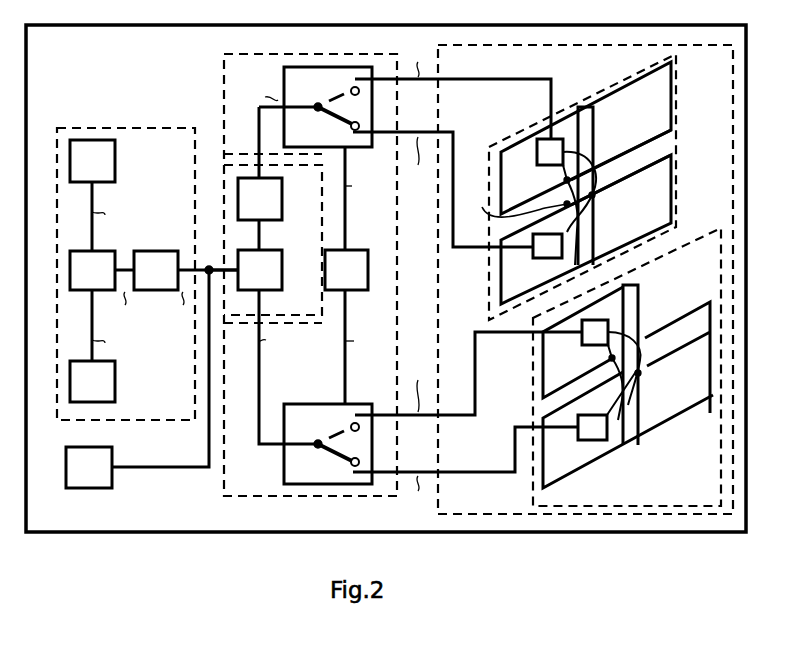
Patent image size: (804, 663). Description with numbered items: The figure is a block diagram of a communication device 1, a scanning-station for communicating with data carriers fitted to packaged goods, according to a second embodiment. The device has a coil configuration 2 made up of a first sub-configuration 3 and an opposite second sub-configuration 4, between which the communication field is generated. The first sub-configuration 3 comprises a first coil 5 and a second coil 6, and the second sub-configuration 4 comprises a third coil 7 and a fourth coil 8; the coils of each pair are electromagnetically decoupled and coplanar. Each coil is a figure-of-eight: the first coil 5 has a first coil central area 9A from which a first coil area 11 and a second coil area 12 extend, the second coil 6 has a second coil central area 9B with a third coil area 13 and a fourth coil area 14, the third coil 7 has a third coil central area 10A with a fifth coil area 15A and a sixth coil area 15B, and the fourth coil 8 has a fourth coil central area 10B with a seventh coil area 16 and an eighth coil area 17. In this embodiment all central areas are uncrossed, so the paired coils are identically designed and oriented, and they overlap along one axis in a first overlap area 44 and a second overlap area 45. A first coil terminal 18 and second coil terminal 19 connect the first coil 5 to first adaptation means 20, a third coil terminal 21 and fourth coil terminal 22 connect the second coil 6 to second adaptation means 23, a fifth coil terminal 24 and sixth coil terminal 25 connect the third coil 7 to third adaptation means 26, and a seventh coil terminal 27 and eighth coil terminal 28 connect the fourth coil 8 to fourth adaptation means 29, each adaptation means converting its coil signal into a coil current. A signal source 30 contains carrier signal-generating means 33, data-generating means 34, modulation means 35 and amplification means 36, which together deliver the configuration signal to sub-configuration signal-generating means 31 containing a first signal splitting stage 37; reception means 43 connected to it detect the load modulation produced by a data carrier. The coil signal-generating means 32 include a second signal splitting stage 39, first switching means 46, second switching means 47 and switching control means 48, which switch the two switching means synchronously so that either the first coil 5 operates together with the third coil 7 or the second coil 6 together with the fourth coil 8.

The communication device 1 is at (268, 537).
The coil configuration 2 is at (436, 312).
The first sub-configuration 3 is at (680, 67).
The second sub-configuration 4 is at (712, 426).
The first coil 5 is at (674, 97).
The second coil 6 is at (676, 213).
The third coil 7 is at (541, 490).
The fourth coil 8 is at (543, 386).
The first coil central area 9A is at (610, 172).
The second coil central area 9B is at (613, 193).
The third coil central area 10A is at (683, 400).
The fourth coil central area 10B is at (653, 445).
The first coil area 11 is at (651, 91).
The second coil area 12 is at (508, 260).
The third coil area 13 is at (512, 164).
The fourth coil area 14 is at (655, 208).
The fifth coil area 15A is at (707, 299).
The sixth coil area 15B is at (559, 460).
The seventh coil area 16 is at (548, 358).
The eighth coil area 17 is at (653, 379).
The first coil terminal 18 is at (592, 198).
The second coil terminal 19 is at (512, 198).
The first adaptation means 20 is at (551, 254).
The third coil terminal 21 is at (596, 150).
The fourth coil terminal 22 is at (560, 178).
The second adaptation means 23 is at (541, 152).
The fifth coil terminal 24 is at (605, 385).
The sixth coil terminal 25 is at (639, 375).
The third adaptation means 26 is at (592, 437).
The seventh coil terminal 27 is at (647, 335).
The eighth coil terminal 28 is at (610, 358).
The fourth adaptation means 29 is at (580, 340).
The signal source 30 is at (116, 126).
The sub-configuration signal-generating means 31 is at (223, 173).
The coil signal-generating means 32 is at (222, 74).
The carrier signal-generating means 33 is at (100, 162).
The data-generating means 34 is at (97, 384).
The modulation means 35 is at (100, 264).
The amplification means 36 is at (152, 292).
The first signal splitting stage 37 is at (258, 200).
The second signal splitting stage 39 is at (258, 279).
The reception means 43 is at (95, 453).
The first overlap area 44 is at (588, 128).
The second overlap area 45 is at (630, 422).
The first switching means 46 is at (308, 80).
The second switching means 47 is at (312, 398).
The switching control means 48 is at (355, 262).